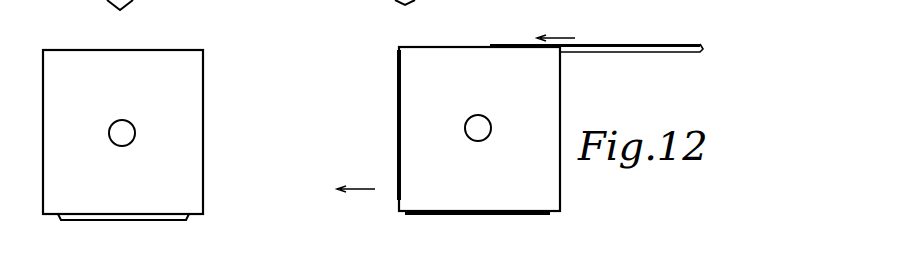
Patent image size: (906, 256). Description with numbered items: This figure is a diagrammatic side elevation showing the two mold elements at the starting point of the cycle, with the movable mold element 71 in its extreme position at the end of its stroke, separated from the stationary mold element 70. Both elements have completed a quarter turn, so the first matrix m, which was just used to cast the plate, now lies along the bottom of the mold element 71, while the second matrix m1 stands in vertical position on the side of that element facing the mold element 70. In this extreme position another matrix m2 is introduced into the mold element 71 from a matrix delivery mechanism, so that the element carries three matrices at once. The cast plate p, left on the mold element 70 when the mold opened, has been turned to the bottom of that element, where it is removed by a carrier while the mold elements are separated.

The mold element 70 is at (123, 132).
The movable mold element 71 is at (479, 129).
The plate p is at (156, 223).
The matrix m is at (515, 213).
The second matrix m1 is at (396, 103).
The matrix m2 is at (590, 42).